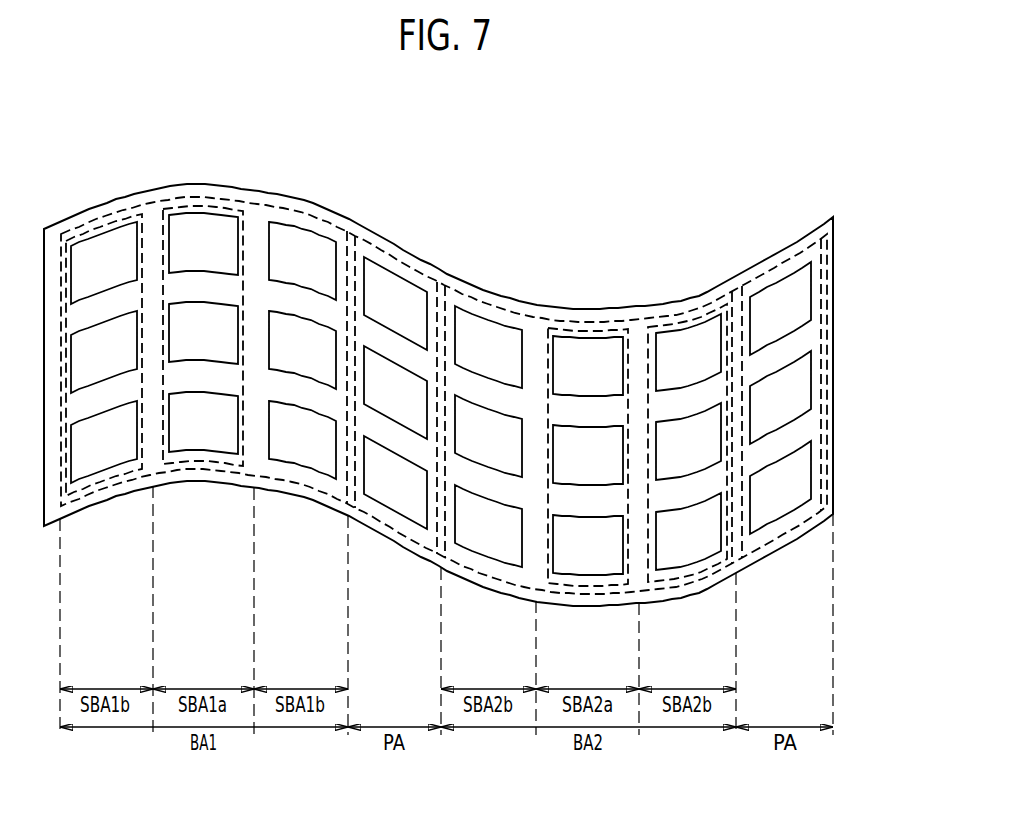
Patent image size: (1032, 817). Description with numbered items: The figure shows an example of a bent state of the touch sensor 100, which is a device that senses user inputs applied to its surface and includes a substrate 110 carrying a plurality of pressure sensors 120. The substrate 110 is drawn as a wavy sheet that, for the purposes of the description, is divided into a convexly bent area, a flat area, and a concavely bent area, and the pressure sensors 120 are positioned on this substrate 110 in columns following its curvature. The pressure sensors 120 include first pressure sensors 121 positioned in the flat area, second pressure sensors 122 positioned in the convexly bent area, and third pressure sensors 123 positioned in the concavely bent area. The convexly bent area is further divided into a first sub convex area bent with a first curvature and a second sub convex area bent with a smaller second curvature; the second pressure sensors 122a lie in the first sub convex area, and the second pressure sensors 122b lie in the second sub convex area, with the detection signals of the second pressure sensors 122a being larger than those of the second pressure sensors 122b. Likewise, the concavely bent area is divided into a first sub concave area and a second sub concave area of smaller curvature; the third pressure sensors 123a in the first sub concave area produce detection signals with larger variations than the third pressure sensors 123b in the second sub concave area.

The touch sensor 100 is at (838, 162).
The substrate 110 is at (837, 389).
The pressure sensors 120 is at (412, 281).
The first pressure sensors 121 is at (380, 252).
The second pressure sensors 122 is at (267, 207).
The second pressure sensors in the first sub convex area 122a is at (212, 468).
The second pressure sensors in the second sub convex area 122b is at (98, 484).
The third pressure sensors 123 is at (597, 318).
The third pressure sensors in the first sub concave area 123a is at (595, 584).
The third pressure sensors in the second sub concave area 123b is at (680, 572).